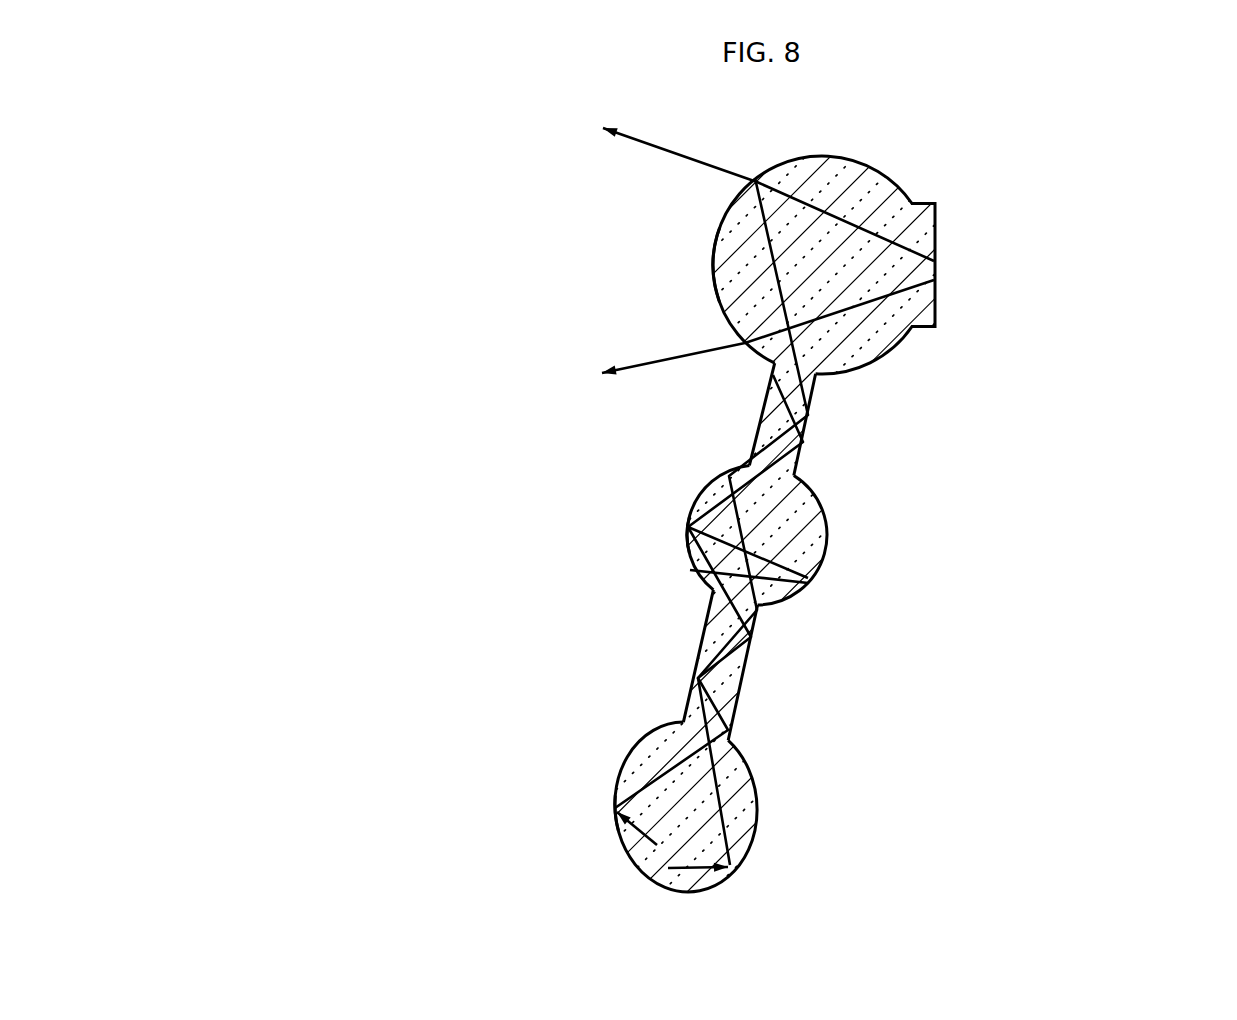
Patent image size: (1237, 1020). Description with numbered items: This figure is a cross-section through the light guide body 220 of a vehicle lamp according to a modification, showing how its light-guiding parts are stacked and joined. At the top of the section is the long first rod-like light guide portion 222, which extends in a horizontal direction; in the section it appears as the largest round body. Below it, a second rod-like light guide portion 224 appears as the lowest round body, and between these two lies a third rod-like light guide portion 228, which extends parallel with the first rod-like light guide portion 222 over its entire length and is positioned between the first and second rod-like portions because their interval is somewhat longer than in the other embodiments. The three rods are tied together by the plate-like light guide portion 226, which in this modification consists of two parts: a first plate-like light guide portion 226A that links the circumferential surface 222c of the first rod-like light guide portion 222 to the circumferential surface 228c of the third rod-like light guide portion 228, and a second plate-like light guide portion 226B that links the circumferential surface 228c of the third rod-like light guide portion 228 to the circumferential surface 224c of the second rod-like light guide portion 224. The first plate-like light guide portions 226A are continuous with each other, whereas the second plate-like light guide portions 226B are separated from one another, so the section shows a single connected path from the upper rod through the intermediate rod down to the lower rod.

The light guide body 220 is at (408, 183).
The first rod-like light guide portion 222 is at (862, 187).
The circumferential surface of the first rod-like light guide portion 222c is at (713, 265).
The second rod-like light guide portion 224 is at (740, 807).
The circumferential surface of the second rod-like light guide portion 224c is at (615, 803).
The plate-like light guide portion 226 is at (1112, 445).
The first plate-like light guide portion 226A is at (812, 425).
The second plate-like light guide portion 226B is at (727, 690).
The third rod-like light guide portion 228 is at (809, 545).
The circumferential surface of the third rod-like light guide portion 228c is at (687, 535).